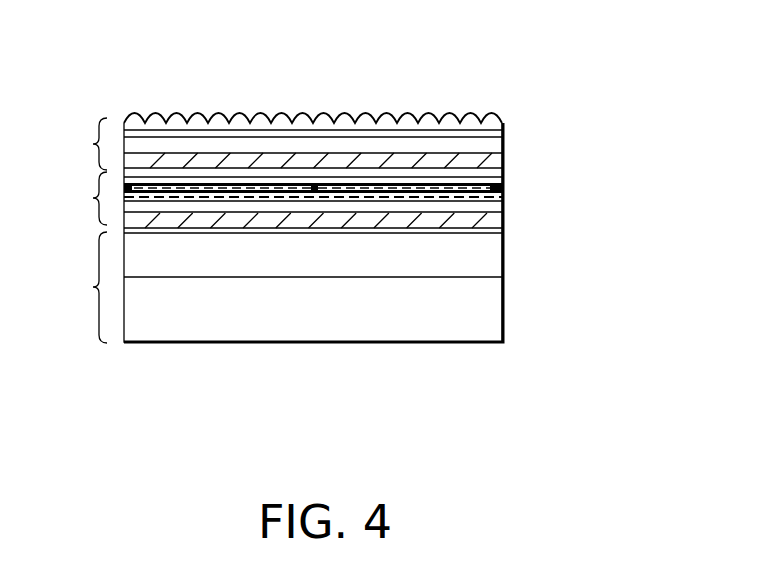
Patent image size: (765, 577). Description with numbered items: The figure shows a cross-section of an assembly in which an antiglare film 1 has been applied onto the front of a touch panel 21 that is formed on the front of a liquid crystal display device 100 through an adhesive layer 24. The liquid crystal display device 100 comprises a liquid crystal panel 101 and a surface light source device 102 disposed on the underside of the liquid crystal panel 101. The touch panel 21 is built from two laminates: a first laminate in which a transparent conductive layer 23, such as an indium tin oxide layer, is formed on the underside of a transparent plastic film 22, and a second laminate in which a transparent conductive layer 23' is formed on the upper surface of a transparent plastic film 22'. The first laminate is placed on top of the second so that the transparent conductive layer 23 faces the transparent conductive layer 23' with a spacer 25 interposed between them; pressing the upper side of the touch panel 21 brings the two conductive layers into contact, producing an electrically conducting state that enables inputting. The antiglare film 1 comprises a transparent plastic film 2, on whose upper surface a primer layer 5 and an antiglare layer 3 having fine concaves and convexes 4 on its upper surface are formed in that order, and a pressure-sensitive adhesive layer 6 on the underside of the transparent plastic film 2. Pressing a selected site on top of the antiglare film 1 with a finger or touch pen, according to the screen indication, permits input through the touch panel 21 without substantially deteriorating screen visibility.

The antiglare film 1 is at (87, 144).
The transparent plastic film 2 is at (378, 148).
The antiglare layer 3 is at (222, 118).
The fine concaves and convexes 4 is at (168, 113).
The primer layer 5 is at (298, 122).
The pressure-sensitive adhesive layer 6 is at (452, 158).
The touch panel 21 is at (79, 198).
The transparent plastic film 22 is at (384, 148).
The transparent plastic film 22' is at (386, 226).
The transparent conductive layer 23 is at (384, 173).
The transparent conductive layer 23' is at (387, 205).
The adhesive layer 24 is at (503, 237).
The spacer 25 is at (314, 193).
The liquid crystal display device 100 is at (73, 287).
The liquid crystal panel 101 is at (207, 257).
The surface light source device 102 is at (353, 327).